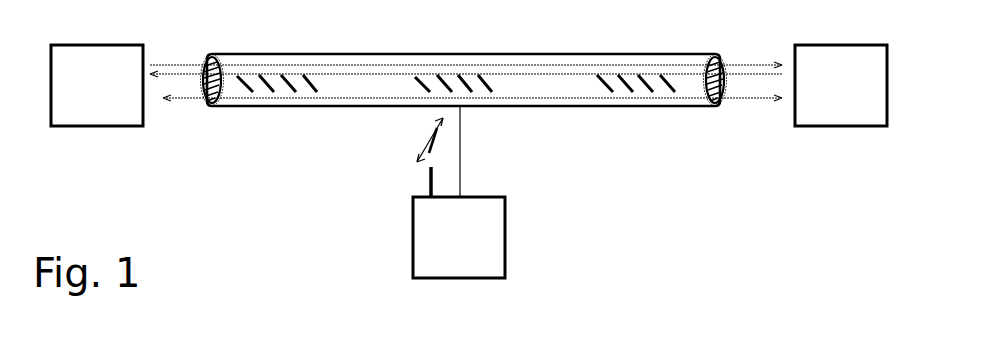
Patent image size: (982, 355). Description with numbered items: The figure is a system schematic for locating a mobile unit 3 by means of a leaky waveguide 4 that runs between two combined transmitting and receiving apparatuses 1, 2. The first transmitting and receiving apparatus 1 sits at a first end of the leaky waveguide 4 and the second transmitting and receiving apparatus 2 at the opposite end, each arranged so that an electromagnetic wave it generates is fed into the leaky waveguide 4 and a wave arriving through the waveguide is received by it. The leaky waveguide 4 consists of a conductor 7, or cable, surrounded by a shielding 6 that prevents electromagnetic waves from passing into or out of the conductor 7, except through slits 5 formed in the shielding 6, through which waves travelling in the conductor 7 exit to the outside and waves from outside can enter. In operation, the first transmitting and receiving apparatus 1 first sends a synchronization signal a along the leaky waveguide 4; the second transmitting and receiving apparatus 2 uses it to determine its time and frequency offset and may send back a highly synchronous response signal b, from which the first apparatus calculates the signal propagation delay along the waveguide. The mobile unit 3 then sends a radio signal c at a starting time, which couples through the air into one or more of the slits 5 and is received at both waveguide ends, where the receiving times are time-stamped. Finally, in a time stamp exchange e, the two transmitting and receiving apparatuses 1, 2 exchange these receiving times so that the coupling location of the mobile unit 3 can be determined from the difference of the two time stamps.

The first transmitting and receiving apparatus 1 is at (105, 126).
The second transmitting and receiving apparatus 2 is at (826, 126).
The mobile unit 3 is at (505, 239).
The leaky waveguide 4 is at (645, 107).
The slits 5 is at (240, 88).
The shielding 6 is at (205, 104).
The conductor 7 is at (205, 64).
The synchronization signal a is at (175, 64).
The response signal b is at (750, 66).
The time stamp exchange e is at (472, 98).
The radio signal c is at (460, 130).